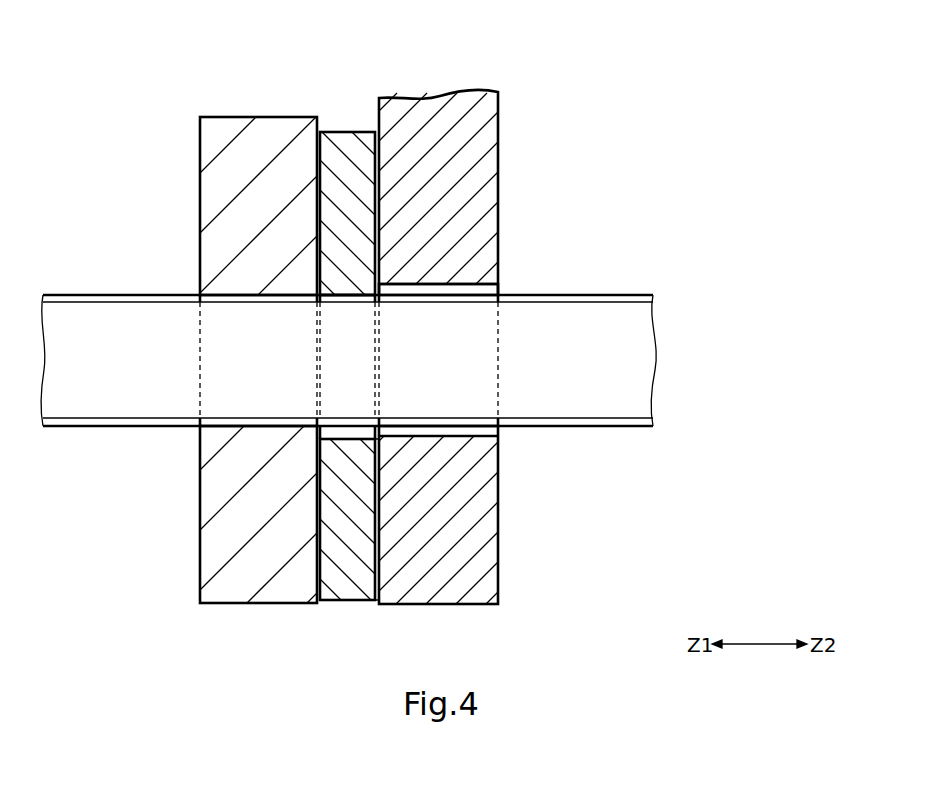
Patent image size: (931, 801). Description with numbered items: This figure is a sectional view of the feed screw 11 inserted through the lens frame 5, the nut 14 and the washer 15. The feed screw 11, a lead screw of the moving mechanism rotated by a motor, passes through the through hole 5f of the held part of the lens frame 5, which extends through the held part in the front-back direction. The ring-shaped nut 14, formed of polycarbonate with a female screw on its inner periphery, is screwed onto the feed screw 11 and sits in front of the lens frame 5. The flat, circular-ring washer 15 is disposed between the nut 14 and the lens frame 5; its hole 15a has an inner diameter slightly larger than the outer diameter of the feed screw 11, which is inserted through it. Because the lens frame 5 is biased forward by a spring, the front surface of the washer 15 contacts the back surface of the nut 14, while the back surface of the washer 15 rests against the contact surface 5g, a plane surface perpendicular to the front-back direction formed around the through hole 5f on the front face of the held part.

The feed screw 11 is at (110, 295).
The nut 14 is at (200, 143).
The washer 15 is at (348, 131).
The hole 15a is at (349, 297).
The lens frame 5 is at (498, 131).
The through hole 5f is at (437, 285).
The contact surface 5g is at (377, 581).